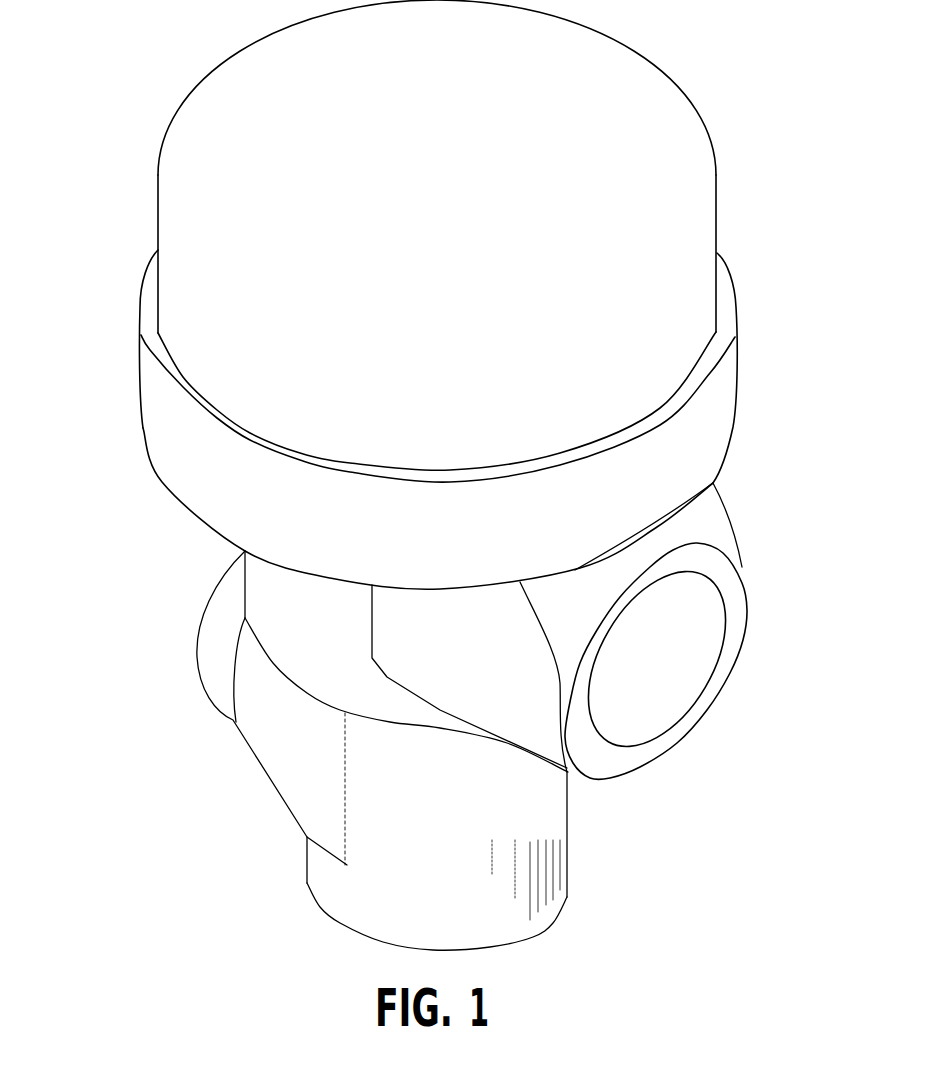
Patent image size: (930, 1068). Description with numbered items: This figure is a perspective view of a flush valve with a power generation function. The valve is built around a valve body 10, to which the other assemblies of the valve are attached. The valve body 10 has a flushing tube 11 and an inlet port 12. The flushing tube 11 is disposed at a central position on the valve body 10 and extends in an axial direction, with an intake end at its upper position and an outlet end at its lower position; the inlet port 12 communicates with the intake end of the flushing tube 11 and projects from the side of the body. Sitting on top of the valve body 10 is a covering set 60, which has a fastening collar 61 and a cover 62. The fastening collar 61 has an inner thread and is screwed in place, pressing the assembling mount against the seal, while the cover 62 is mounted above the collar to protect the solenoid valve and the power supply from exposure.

The valve body 10 is at (601, 914).
The flushing tube 11 is at (573, 845).
The inlet port 12 is at (713, 528).
The covering set 60 is at (122, 185).
The fastening collar 61 is at (183, 467).
The cover 62 is at (673, 96).